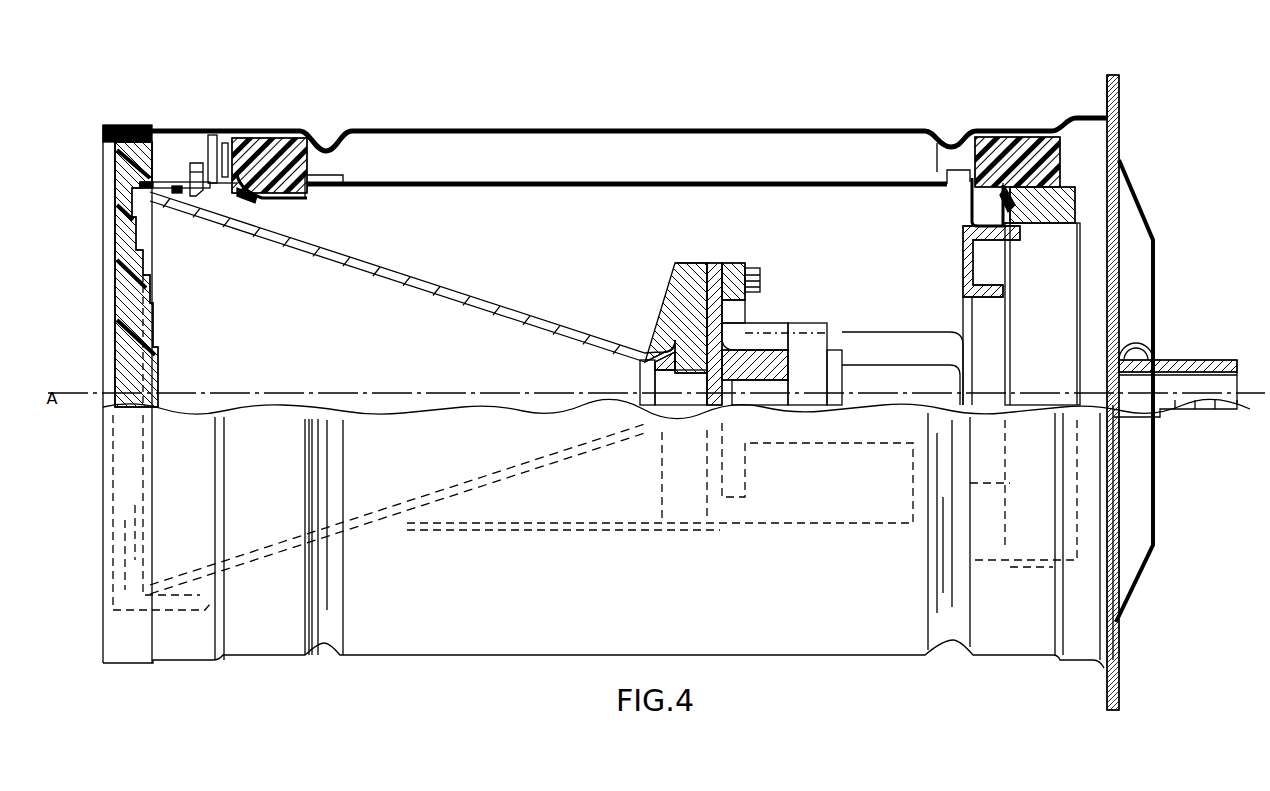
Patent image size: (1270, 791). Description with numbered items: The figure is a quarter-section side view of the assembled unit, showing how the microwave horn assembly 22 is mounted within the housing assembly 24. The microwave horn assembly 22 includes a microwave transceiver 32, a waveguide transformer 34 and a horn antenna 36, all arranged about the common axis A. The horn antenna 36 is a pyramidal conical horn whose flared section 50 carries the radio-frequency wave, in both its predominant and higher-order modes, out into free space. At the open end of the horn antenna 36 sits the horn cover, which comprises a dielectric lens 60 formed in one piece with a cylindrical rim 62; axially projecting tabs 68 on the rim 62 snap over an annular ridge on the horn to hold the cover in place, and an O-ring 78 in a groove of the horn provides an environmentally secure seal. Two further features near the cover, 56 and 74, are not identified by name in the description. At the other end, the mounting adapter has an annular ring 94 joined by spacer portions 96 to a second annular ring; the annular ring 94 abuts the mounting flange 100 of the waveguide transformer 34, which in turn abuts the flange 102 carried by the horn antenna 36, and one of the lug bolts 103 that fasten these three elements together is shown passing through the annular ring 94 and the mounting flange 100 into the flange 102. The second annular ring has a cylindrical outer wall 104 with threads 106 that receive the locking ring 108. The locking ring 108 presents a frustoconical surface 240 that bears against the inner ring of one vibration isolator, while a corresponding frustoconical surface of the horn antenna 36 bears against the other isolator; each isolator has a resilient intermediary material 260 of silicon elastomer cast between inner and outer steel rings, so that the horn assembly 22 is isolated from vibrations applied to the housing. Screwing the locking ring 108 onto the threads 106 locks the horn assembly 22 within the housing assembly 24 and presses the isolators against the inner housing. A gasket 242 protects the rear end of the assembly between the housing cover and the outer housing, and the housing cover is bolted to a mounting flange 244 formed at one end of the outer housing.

The microwave horn assembly 22 is at (603, 300).
The housing assembly 24 is at (690, 120).
The microwave transceiver 32 is at (835, 358).
The waveguide transformer 34 is at (770, 322).
The horn antenna 36 is at (455, 333).
The flared section 50 is at (382, 262).
The end cap 56 is at (153, 306).
The dielectric lens 60 is at (112, 327).
The cylindrical rim 62 is at (162, 184).
The axially projecting tabs 68 is at (210, 135).
The plate 74 is at (146, 188).
The O-ring 78 is at (176, 193).
The annular ring 94 is at (741, 262).
The spacer portion 96 is at (897, 332).
The mounting flange 100 is at (715, 262).
The flange 102 is at (689, 262).
The lug bolt 103 is at (762, 277).
The cylindrical outer wall 104 is at (967, 223).
The threads 106 is at (1028, 250).
The locking ring 108 is at (1055, 203).
The frustoconical surface 240 is at (983, 196).
The gasket 242 is at (1117, 76).
The mounting flange 244 is at (1107, 98).
The resilient intermediary material 260 is at (354, 175).